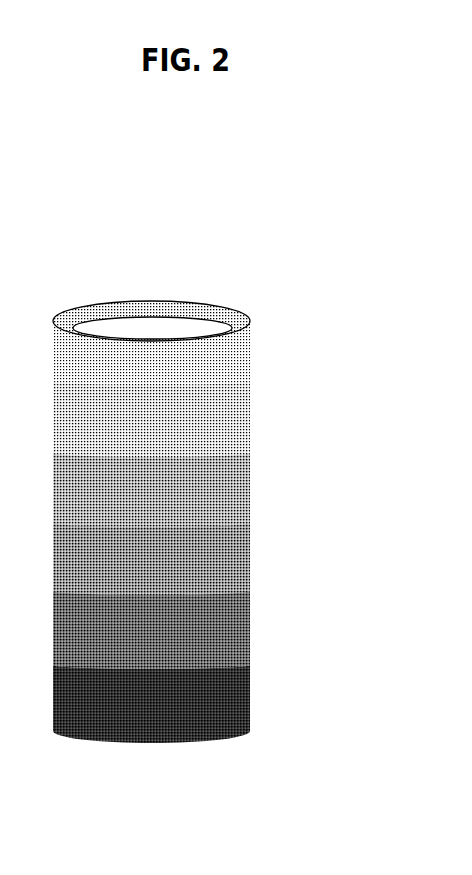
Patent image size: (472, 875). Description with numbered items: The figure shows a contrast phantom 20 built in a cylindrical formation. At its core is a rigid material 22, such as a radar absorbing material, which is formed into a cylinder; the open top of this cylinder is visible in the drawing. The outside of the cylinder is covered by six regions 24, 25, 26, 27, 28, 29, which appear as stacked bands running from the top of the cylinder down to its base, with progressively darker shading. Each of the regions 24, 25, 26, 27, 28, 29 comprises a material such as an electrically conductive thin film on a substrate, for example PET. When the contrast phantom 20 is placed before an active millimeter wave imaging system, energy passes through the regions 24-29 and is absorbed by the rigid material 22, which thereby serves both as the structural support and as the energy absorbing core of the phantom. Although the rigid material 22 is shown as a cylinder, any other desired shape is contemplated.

The contrast phantom 20 is at (217, 452).
The rigid material 22 is at (224, 310).
The first region 24 is at (230, 358).
The second region 25 is at (226, 428).
The third region 26 is at (226, 493).
The fourth region 27 is at (226, 565).
The fifth region 28 is at (226, 642).
The sixth region 29 is at (222, 698).